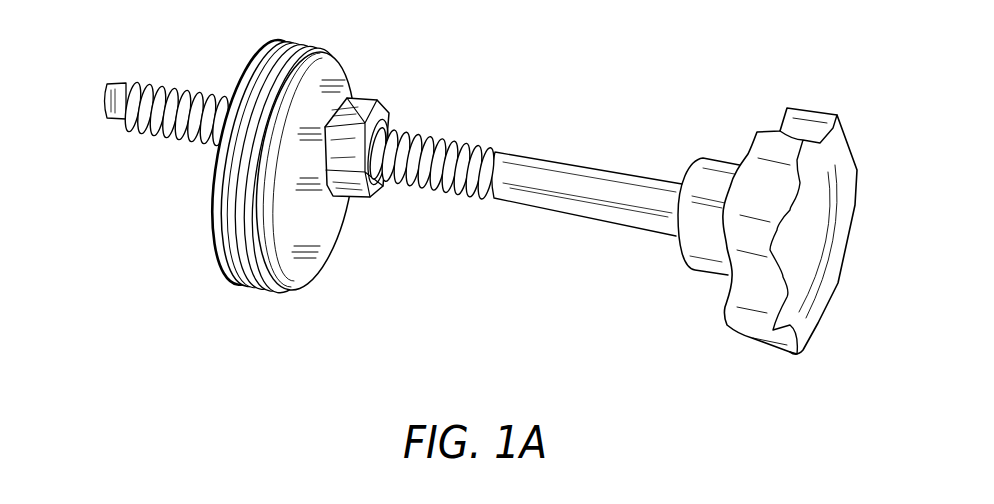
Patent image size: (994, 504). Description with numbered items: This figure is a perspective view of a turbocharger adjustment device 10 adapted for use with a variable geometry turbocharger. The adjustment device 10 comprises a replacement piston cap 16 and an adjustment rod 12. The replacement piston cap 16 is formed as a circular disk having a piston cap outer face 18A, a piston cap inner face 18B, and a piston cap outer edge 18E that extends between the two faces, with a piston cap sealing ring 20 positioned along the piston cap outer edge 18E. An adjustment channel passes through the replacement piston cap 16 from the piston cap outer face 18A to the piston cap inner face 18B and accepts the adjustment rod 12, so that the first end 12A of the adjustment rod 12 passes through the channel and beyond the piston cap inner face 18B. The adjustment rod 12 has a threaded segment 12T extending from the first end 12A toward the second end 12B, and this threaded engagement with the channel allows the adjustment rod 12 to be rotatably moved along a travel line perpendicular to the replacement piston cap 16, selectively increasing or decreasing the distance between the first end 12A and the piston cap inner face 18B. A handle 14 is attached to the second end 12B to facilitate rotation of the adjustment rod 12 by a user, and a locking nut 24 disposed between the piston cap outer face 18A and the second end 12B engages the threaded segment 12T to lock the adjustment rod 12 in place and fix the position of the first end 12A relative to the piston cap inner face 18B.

The turbocharger adjustment device 10 is at (700, 78).
The adjustment rod 12 is at (365, 154).
The first end 12A is at (109, 86).
The second end 12B is at (687, 183).
The threaded segment 12T is at (455, 138).
The handle 14 is at (843, 218).
The replacement piston cap 16 is at (347, 62).
The piston cap outer face 18A is at (318, 235).
The piston cap inner face 18B is at (210, 191).
The piston cap outer edge 18E is at (224, 281).
The piston cap sealing ring 20 is at (255, 291).
The locking nut 24 is at (382, 102).